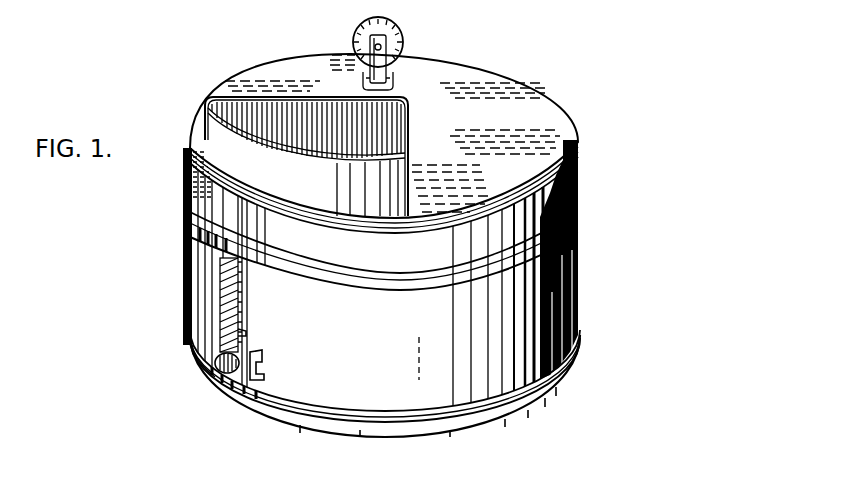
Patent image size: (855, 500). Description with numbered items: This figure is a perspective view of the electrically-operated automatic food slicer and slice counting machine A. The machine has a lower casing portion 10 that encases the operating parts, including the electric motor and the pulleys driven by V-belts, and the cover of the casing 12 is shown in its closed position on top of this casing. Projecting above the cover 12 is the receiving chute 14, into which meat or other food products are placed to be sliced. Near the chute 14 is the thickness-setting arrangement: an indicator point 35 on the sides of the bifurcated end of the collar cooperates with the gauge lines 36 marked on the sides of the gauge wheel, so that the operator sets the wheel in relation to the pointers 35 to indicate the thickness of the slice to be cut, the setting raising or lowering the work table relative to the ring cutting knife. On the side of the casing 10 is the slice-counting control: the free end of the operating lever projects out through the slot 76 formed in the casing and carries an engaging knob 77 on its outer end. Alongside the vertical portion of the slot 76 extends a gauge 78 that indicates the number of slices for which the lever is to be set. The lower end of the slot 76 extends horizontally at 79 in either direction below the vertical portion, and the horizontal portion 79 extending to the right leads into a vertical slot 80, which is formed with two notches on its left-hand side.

The lower casing portion 10 is at (573, 268).
The cover of the casing 12 is at (560, 108).
The receiving chute 14 is at (207, 140).
The indicator point 35 is at (393, 22).
The gauge lines 36 is at (357, 48).
The electrically-operated automatic food slicer and slice counting machine A is at (573, 233).
The gauge 78 is at (223, 293).
The slot 76 is at (240, 333).
The engaging knob 77 is at (226, 396).
The horizontal portion 79 is at (253, 384).
The vertical slot 80 is at (200, 372).